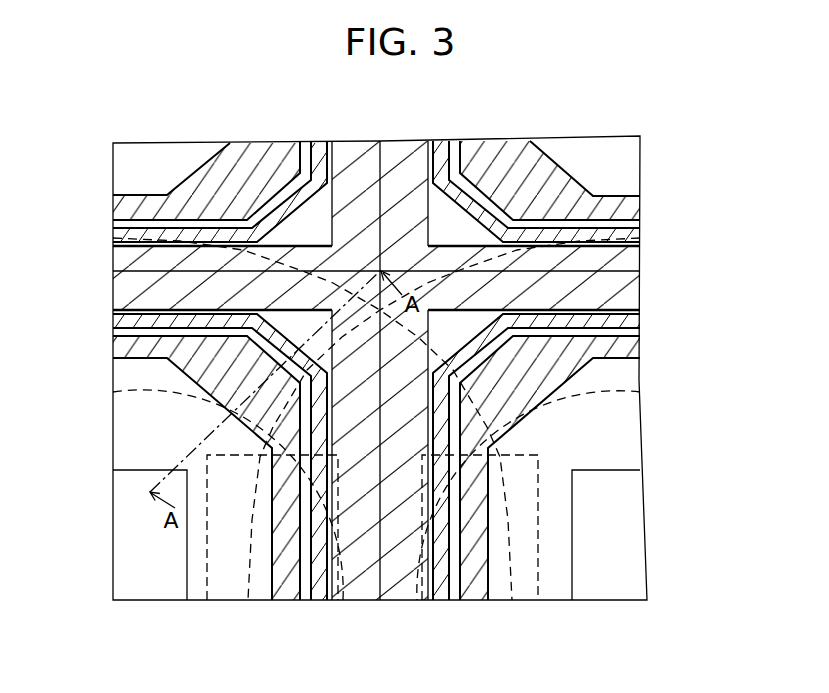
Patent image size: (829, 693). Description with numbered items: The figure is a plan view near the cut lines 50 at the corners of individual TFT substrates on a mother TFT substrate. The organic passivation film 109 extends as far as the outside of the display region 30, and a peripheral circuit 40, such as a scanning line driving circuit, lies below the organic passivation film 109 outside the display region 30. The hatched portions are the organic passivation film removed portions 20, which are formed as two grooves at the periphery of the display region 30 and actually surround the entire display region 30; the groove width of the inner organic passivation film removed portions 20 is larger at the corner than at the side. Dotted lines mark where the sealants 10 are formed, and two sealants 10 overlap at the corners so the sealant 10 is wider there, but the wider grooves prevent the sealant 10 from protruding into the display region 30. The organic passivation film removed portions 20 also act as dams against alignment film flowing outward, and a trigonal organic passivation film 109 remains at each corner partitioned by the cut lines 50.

The sealant 10 is at (103, 238).
The organic passivation film removed portion 20 is at (625, 293).
The display region 30 is at (135, 520).
The peripheral circuit 40 is at (225, 588).
The cut line 50 is at (643, 257).
The organic passivation film 109 is at (137, 427).